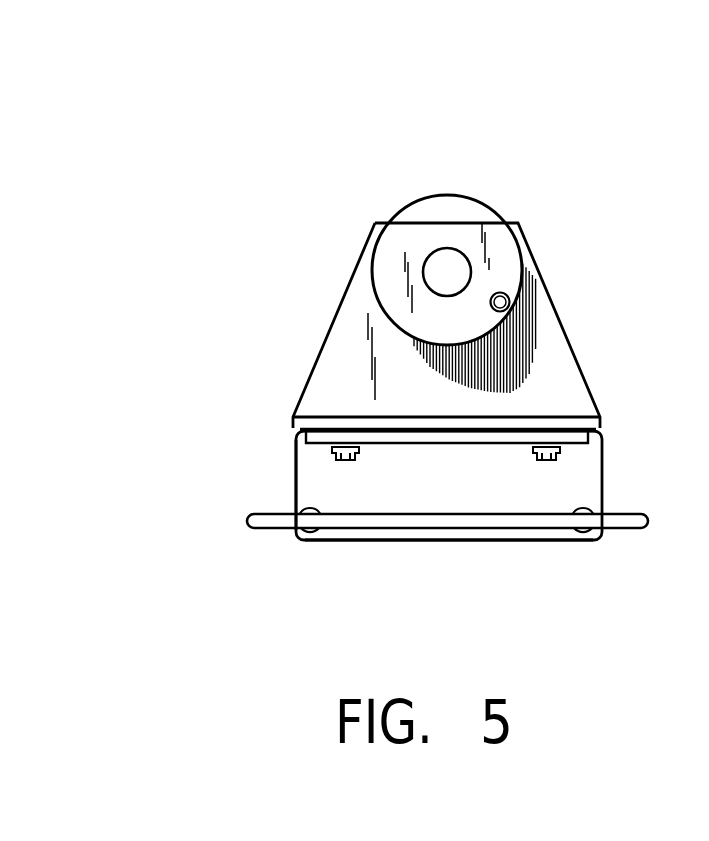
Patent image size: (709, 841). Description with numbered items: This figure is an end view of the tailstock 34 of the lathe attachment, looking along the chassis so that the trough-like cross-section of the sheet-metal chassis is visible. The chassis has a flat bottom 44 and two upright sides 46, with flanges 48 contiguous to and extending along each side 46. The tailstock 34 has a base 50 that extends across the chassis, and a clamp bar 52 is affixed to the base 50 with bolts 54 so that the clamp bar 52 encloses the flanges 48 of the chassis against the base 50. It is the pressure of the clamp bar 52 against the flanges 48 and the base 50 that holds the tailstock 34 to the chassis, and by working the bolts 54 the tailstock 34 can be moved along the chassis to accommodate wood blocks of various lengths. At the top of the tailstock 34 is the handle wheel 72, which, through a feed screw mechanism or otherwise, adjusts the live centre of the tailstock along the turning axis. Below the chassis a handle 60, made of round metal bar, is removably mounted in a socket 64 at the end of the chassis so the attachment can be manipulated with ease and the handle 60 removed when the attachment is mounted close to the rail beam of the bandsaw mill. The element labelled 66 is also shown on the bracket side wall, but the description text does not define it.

The tailstock 34 is at (258, 192).
The handle wheel 72 is at (412, 202).
The base 50 is at (555, 415).
The flanges 48 is at (322, 415).
The clamp bar 52 is at (430, 443).
The bolts 54 is at (348, 460).
The sides 46 is at (603, 478).
The side wall 66 is at (292, 488).
The flat bottom 44 is at (553, 541).
The sockets 64 is at (312, 510).
The handle 60 is at (270, 530).